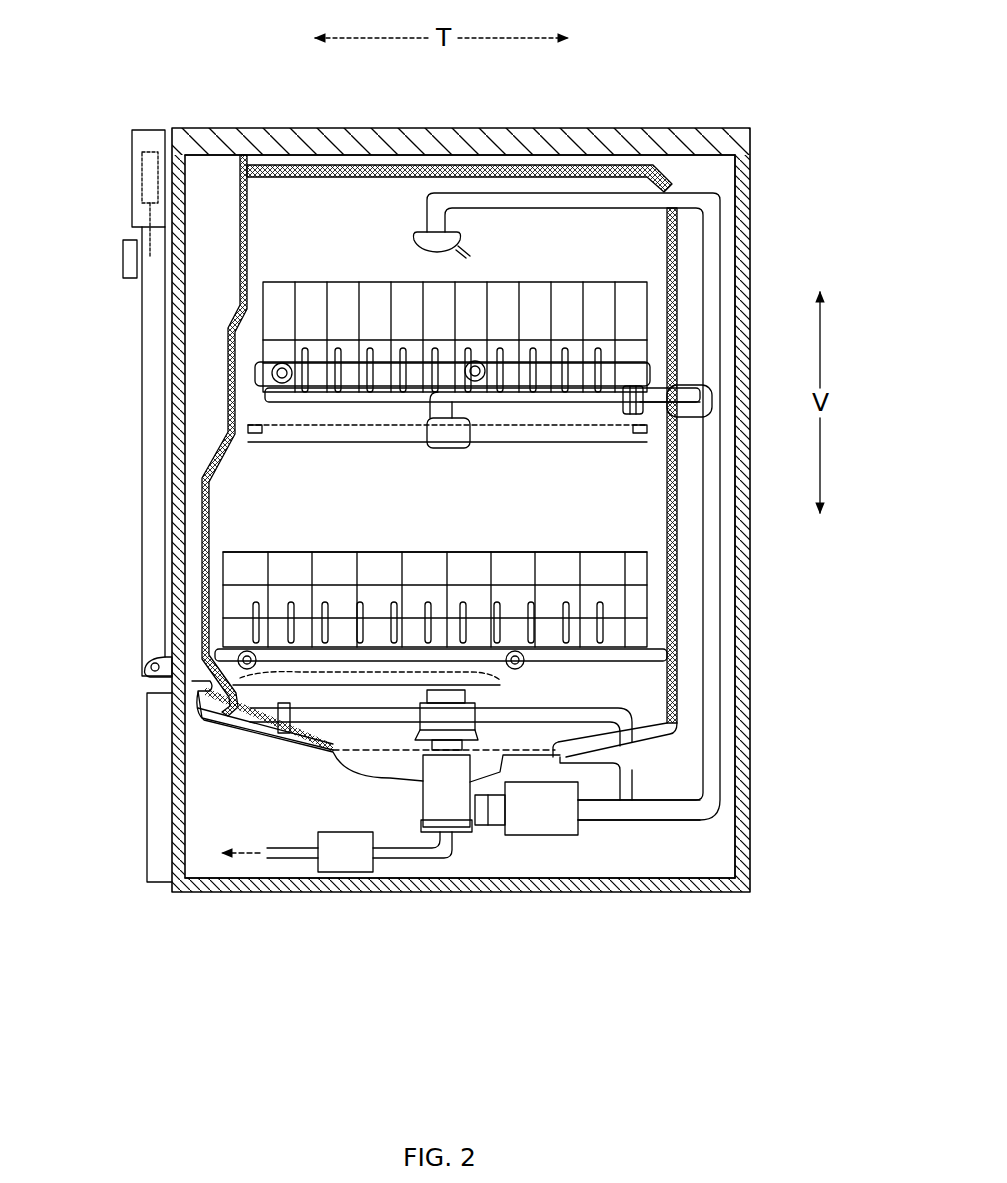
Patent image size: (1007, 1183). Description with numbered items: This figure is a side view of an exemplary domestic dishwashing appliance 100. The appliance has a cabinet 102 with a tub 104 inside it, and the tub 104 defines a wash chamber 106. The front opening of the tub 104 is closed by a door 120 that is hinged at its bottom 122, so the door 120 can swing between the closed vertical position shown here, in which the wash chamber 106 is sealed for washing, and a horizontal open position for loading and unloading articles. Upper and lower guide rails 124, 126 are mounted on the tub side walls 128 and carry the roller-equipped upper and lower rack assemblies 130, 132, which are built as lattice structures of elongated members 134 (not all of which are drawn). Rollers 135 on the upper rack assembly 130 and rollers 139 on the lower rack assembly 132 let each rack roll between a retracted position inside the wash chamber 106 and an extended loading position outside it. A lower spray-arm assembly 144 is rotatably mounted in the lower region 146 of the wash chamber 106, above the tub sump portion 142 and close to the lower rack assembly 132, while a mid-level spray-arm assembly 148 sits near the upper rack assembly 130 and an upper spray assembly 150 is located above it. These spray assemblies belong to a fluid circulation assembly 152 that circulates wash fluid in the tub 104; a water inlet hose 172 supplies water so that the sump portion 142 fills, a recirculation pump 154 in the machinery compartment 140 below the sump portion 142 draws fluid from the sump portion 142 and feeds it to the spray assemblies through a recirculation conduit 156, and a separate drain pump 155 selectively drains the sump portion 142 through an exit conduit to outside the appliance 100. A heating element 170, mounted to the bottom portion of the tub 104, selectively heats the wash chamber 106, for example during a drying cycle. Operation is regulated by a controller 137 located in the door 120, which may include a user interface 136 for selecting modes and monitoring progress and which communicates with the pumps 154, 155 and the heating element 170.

The dishwashing appliance 100 is at (623, 87).
The cabinet 102 is at (752, 182).
The tub 104 is at (207, 473).
The wash chamber 106 is at (190, 468).
The door 120 is at (140, 560).
The bottom 122 is at (142, 677).
The upper guide rail 124 is at (262, 367).
The lower guide rail 126 is at (205, 687).
The tub side walls 128 is at (358, 128).
The upper rack assembly 130 is at (314, 268).
The lower rack assembly 132 is at (525, 546).
The elongated members 134 is at (378, 548).
The rollers 135 is at (257, 388).
The user interface 136 is at (123, 262).
The controller 137 is at (132, 175).
The rollers 139 is at (508, 659).
The machinery compartment 140 is at (625, 870).
The tub sump portion 142 is at (672, 748).
The lower spray-arm assembly 144 is at (264, 690).
The lower region 146 is at (654, 662).
The mid-level spray-arm assembly 148 is at (482, 432).
The upper spray assembly 150 is at (462, 252).
The fluid circulation assembly 152 is at (737, 486).
The recirculation pump 154 is at (542, 823).
The drain pump 155 is at (362, 867).
The recirculation conduit 156 is at (676, 808).
The heating element 170 is at (247, 707).
The water inlet hose 172 is at (593, 760).